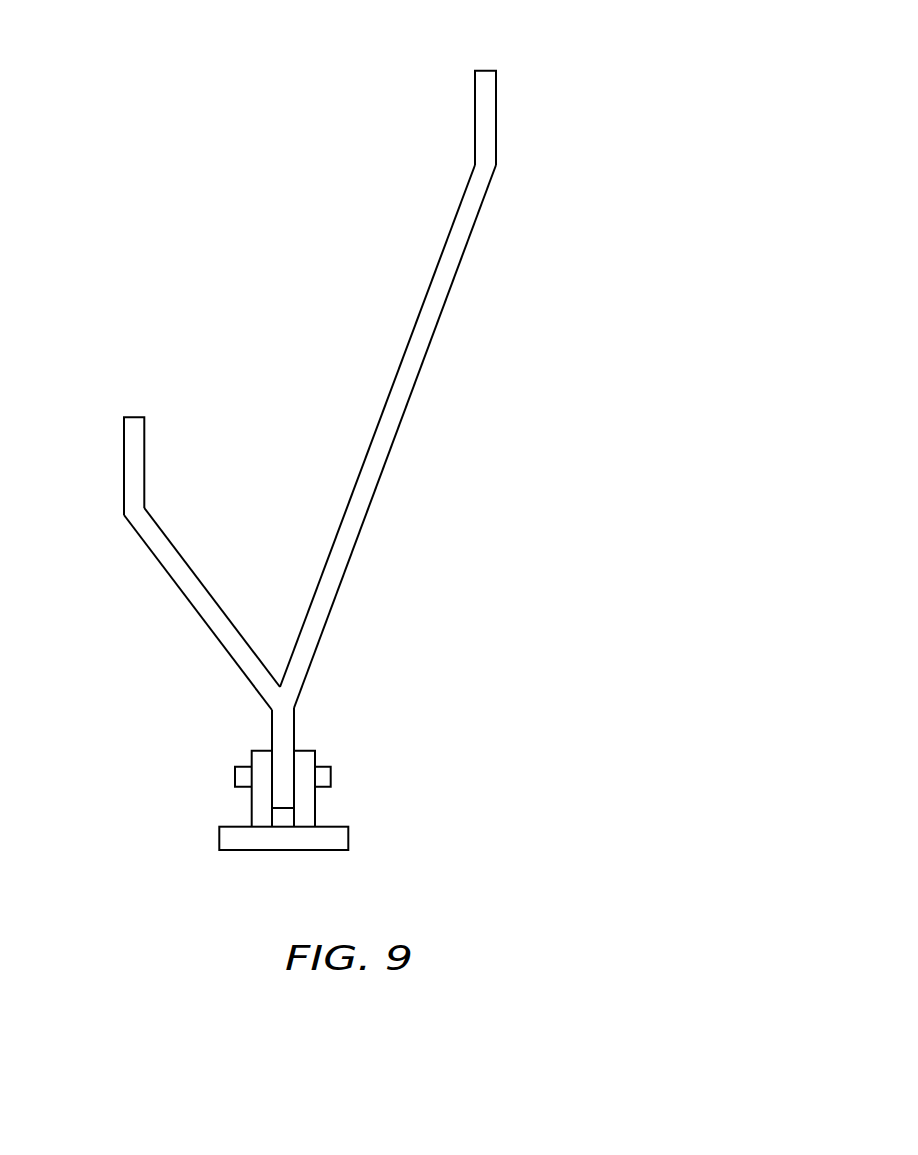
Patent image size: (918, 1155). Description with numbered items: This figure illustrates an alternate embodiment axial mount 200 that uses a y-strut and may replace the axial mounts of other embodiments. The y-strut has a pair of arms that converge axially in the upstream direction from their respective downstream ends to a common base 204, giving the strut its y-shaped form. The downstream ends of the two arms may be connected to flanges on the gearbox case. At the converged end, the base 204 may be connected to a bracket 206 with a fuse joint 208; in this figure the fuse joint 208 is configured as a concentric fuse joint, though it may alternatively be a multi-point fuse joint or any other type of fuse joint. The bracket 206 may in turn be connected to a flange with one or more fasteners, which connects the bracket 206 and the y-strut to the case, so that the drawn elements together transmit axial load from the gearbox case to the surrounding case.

The axial mount 200 is at (118, 235).
The base 204 is at (294, 730).
The fuse joint 208 is at (331, 775).
The bracket 206 is at (348, 832).